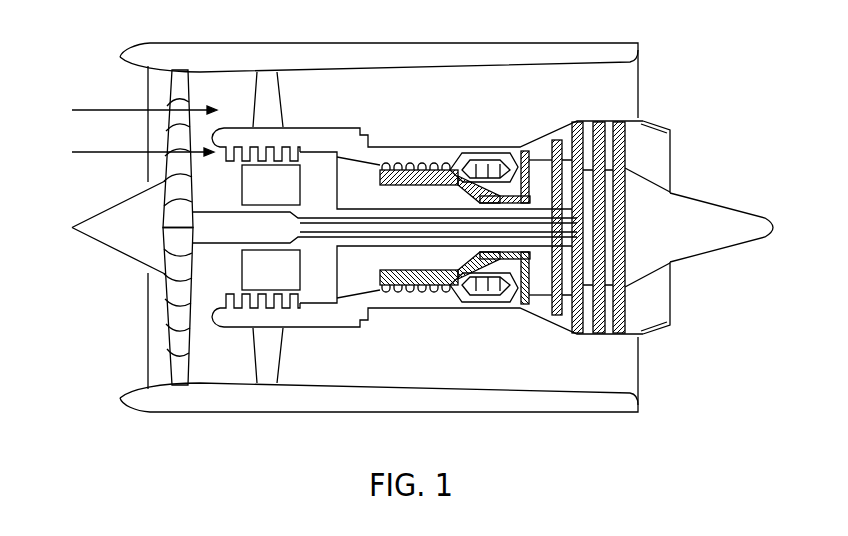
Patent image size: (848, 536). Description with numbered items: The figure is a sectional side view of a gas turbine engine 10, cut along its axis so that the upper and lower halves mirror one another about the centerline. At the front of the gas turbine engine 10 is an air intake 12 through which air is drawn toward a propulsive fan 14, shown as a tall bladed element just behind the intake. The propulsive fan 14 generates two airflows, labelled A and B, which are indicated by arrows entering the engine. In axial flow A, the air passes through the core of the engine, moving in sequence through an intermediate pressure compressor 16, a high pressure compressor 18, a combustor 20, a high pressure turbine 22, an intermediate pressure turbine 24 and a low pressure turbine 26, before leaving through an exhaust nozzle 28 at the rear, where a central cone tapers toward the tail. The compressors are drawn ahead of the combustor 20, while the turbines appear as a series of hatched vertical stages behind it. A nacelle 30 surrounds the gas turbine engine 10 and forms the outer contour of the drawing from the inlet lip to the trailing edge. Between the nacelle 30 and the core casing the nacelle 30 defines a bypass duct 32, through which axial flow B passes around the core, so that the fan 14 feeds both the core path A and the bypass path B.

The gas turbine engine 10 is at (110, 44).
The air intake 12 is at (157, 100).
The propulsive fan 14 is at (172, 70).
The intermediate pressure compressor 16 is at (297, 176).
The high pressure compressor 18 is at (404, 163).
The combustor 20 is at (488, 163).
The high pressure turbine 22 is at (527, 147).
The intermediate pressure turbine 24 is at (567, 133).
The low pressure turbine 26 is at (630, 138).
The exhaust nozzle 28 is at (648, 163).
The nacelle 30 is at (226, 74).
The bypass duct 32 is at (444, 104).
The core airflow A is at (130, 152).
The bypass airflow B is at (131, 112).